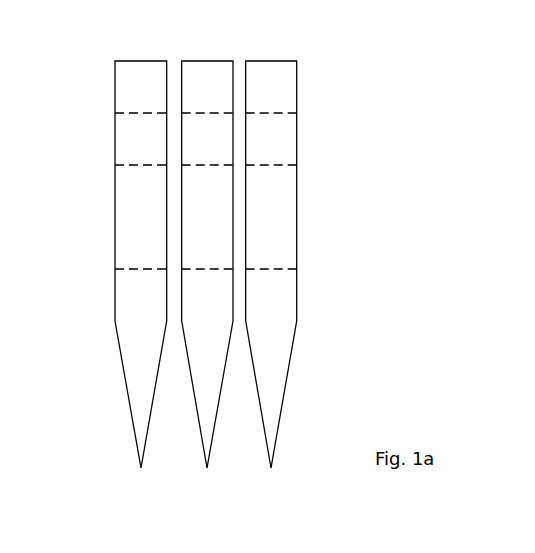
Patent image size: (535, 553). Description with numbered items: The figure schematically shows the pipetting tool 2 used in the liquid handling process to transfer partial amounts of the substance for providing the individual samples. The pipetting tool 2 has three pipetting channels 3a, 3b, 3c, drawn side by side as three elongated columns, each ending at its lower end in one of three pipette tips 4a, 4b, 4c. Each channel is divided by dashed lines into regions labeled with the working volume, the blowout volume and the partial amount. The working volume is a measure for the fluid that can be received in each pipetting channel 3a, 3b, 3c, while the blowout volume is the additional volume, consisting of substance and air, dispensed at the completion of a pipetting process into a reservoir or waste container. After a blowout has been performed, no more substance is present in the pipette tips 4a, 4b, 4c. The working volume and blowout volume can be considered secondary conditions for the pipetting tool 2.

The pipetting tool 2 is at (70, 113).
The pipetting channel 3a is at (150, 58).
The pipetting channel 3b is at (217, 58).
The pipetting channel 3c is at (281, 58).
The pipette tip 4a is at (123, 468).
The pipette tip 4b is at (203, 466).
The pipette tip 4c is at (268, 466).